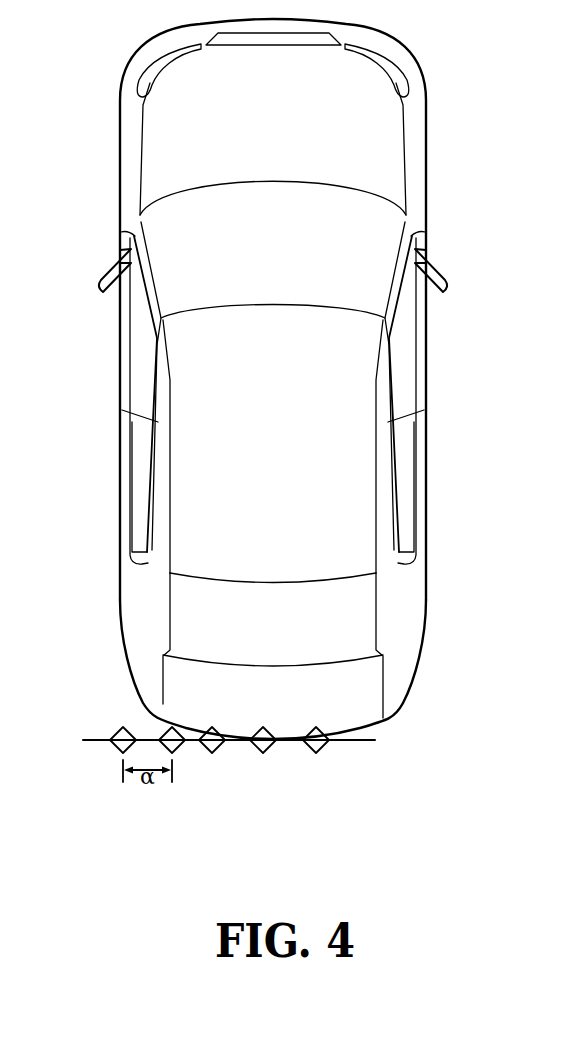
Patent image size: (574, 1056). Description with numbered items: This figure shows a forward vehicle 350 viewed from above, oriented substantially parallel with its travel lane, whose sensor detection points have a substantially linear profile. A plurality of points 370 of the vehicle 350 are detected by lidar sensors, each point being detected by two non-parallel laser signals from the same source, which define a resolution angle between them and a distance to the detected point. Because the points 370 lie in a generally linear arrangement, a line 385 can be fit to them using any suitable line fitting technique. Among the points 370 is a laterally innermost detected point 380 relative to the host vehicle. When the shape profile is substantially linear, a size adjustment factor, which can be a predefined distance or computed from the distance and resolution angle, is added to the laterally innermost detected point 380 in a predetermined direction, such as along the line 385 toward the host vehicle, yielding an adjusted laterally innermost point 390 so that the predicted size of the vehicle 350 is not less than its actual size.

The vehicle 350 is at (426, 470).
The plurality of points 370 is at (174, 754).
The laterally innermost detected point 380 is at (181, 711).
The line 385 is at (358, 740).
The adjusted laterally innermost point 390 is at (123, 726).